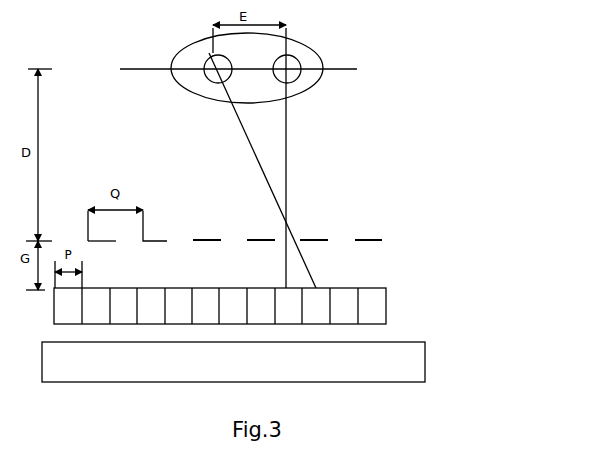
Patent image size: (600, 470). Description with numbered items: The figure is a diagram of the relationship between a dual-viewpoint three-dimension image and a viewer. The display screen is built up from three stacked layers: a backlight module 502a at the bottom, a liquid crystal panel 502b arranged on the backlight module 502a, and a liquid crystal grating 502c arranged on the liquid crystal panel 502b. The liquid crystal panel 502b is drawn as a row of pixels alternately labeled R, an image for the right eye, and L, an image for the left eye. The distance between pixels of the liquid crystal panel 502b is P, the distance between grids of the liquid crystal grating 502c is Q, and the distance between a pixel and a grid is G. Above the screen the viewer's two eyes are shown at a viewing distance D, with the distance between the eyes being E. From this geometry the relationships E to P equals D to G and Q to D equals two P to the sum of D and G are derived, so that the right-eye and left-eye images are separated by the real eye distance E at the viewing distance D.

The backlight module 502a is at (425, 358).
The liquid crystal panel 502b is at (386, 304).
The liquid crystal grating 502c is at (385, 236).